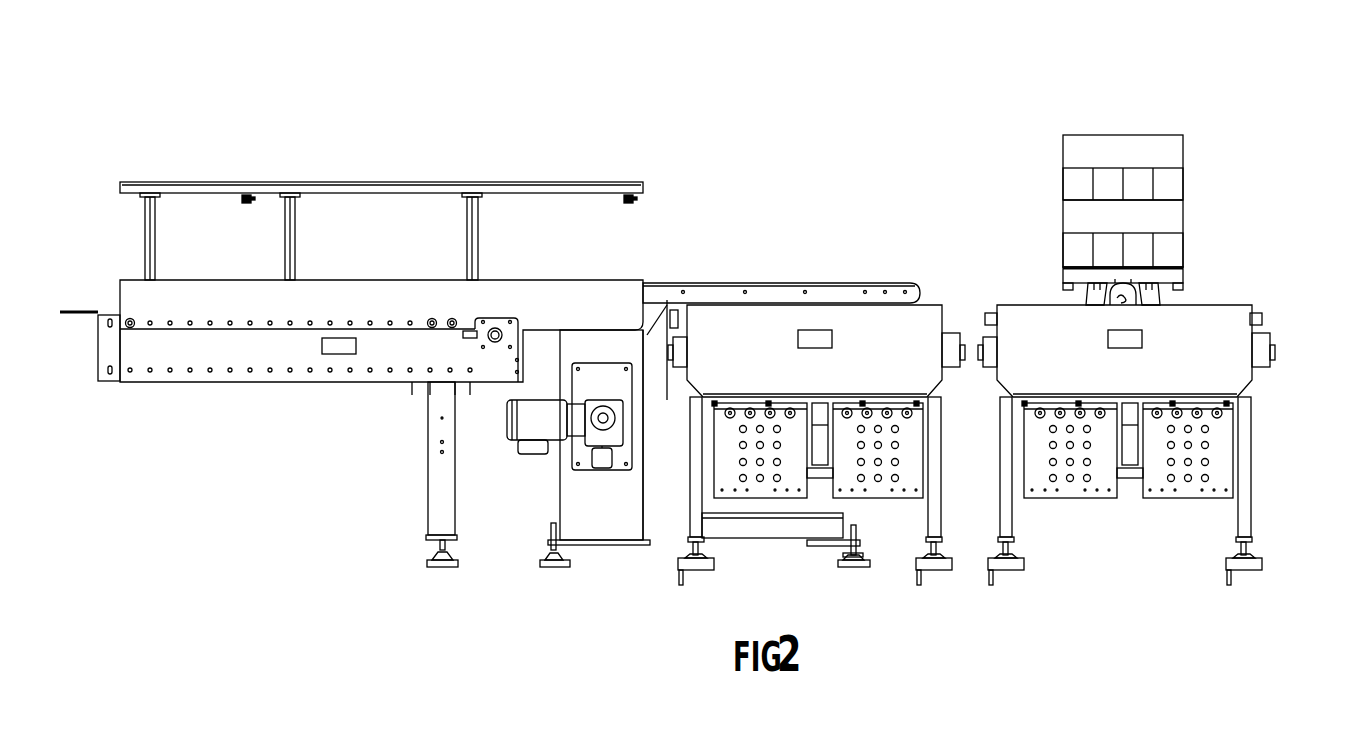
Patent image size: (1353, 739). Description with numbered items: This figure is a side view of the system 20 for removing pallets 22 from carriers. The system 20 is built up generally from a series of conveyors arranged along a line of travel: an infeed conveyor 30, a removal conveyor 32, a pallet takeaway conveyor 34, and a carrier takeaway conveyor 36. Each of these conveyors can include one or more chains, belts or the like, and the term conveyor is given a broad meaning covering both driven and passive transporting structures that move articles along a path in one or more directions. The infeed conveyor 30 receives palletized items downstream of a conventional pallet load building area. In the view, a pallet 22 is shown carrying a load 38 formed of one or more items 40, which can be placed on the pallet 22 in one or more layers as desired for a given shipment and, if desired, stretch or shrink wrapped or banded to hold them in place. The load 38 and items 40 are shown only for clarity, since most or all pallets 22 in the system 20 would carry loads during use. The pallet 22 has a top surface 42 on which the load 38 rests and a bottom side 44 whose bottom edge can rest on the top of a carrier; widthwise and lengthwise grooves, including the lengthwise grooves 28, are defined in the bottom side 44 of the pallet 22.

The system 20 is at (892, 130).
The pallet 22 is at (1173, 275).
The lengthwise grooves 28 is at (1120, 293).
The infeed conveyor 30 is at (1225, 372).
The removal conveyor 32 is at (713, 295).
The pallet takeaway conveyor 34 is at (568, 300).
The carrier takeaway conveyor 36 is at (763, 327).
The load 38 is at (1098, 125).
The items 40 is at (1173, 180).
The top surface 42 is at (1143, 263).
The bottom side 44 is at (1168, 293).